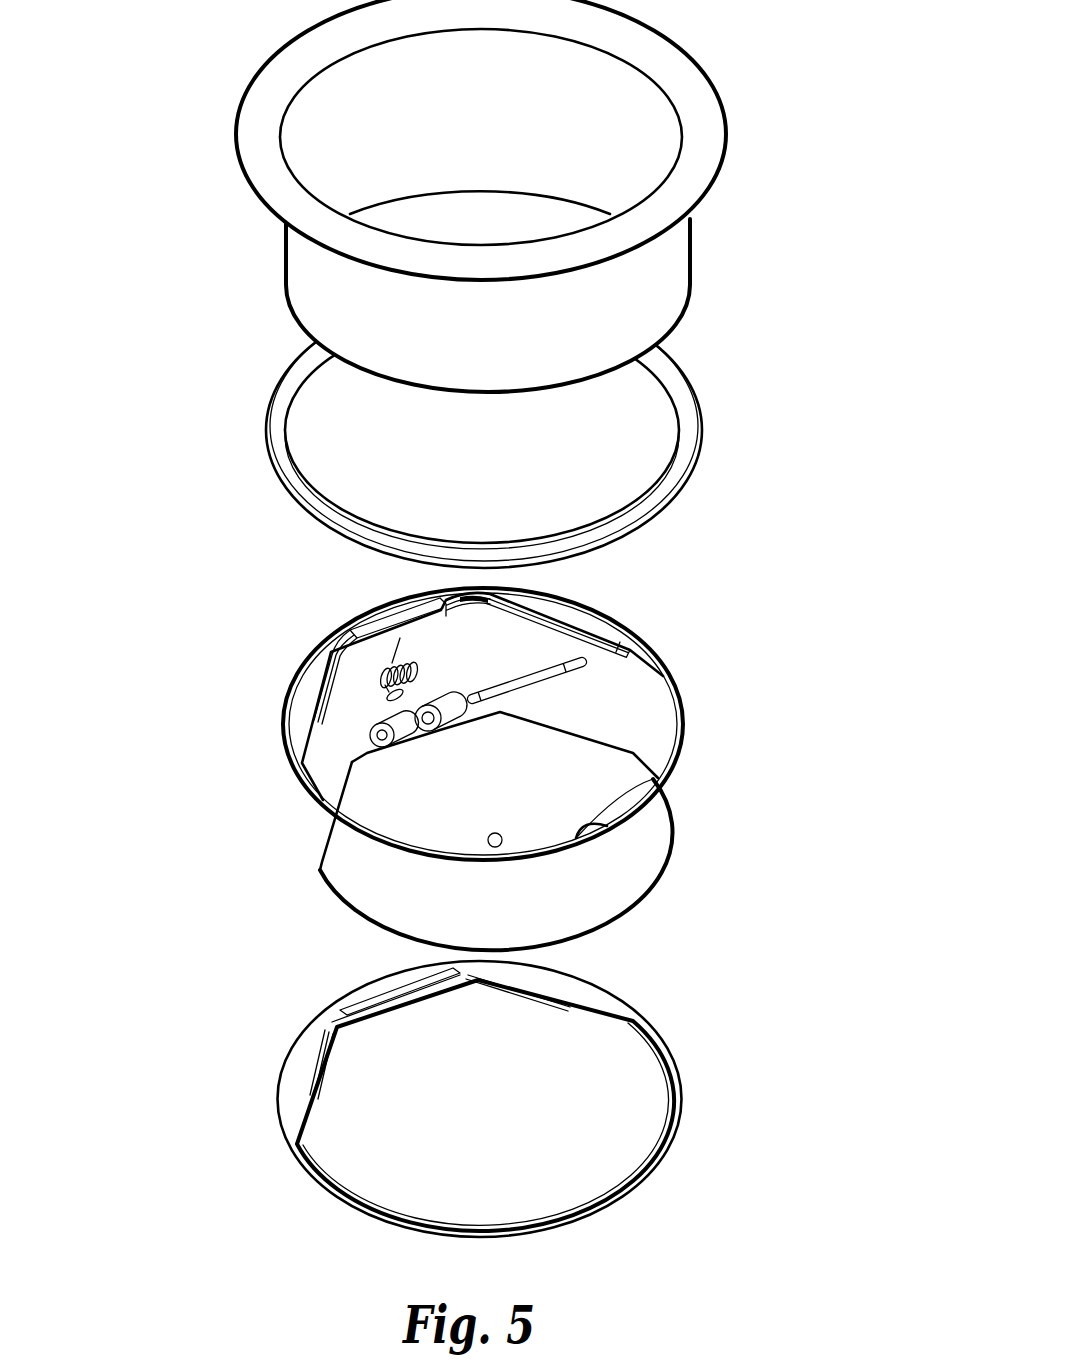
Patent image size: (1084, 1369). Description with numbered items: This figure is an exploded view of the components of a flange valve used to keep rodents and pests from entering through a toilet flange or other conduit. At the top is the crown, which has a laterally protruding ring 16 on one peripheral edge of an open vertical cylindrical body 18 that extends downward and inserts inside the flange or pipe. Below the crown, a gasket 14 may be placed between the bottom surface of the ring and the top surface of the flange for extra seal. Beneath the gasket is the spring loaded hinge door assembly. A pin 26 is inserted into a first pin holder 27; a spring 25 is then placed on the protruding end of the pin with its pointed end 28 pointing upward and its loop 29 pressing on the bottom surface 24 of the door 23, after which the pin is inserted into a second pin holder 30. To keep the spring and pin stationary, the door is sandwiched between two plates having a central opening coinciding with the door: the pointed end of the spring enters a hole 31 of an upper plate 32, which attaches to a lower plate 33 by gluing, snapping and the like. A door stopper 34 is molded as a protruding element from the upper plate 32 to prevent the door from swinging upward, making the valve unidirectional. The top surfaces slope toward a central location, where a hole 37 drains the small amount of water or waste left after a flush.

The gasket 14 is at (693, 418).
The laterally protruding ring 16 is at (674, 61).
The vertical cylindrical body 18 is at (672, 257).
The door 23 is at (529, 775).
The bottom surface of the door 24 is at (400, 898).
The spring 25 is at (382, 682).
The pin 26 is at (622, 632).
The first pin holder 27 is at (443, 703).
The pointed end of the spring 28 is at (393, 655).
The loop of the spring 29 is at (372, 740).
The second pin holder 30 is at (385, 705).
The hole of the upper plate 31 is at (397, 613).
The upper plate 32 is at (675, 693).
The lower plate 33 is at (662, 1050).
The door stopper 34 is at (655, 778).
The hole 37 is at (502, 846).